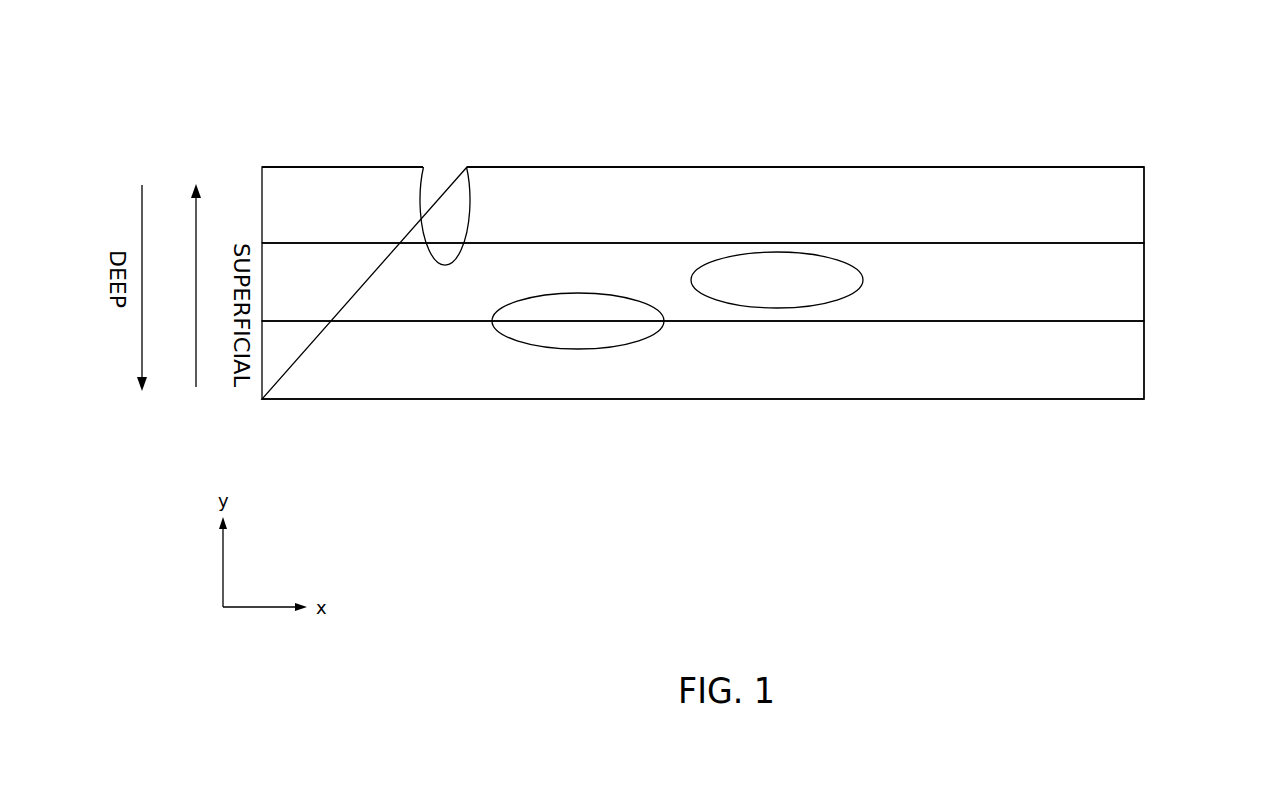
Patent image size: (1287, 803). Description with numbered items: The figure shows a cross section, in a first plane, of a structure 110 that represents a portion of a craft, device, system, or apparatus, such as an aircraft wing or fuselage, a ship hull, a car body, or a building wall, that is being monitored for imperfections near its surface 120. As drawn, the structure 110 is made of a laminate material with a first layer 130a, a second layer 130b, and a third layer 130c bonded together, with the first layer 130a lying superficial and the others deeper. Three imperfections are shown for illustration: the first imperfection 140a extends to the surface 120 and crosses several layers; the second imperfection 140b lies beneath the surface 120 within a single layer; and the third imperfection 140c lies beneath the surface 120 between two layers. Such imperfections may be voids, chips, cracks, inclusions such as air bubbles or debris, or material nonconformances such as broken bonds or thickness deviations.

The structure 110 is at (222, 156).
The surface 120 is at (900, 166).
The first layer 130a is at (1106, 211).
The second layer 130b is at (1106, 288).
The third layer 130c is at (1106, 365).
The first imperfection 140a is at (445, 197).
The second imperfection 140b is at (775, 283).
The third imperfection 140c is at (588, 330).